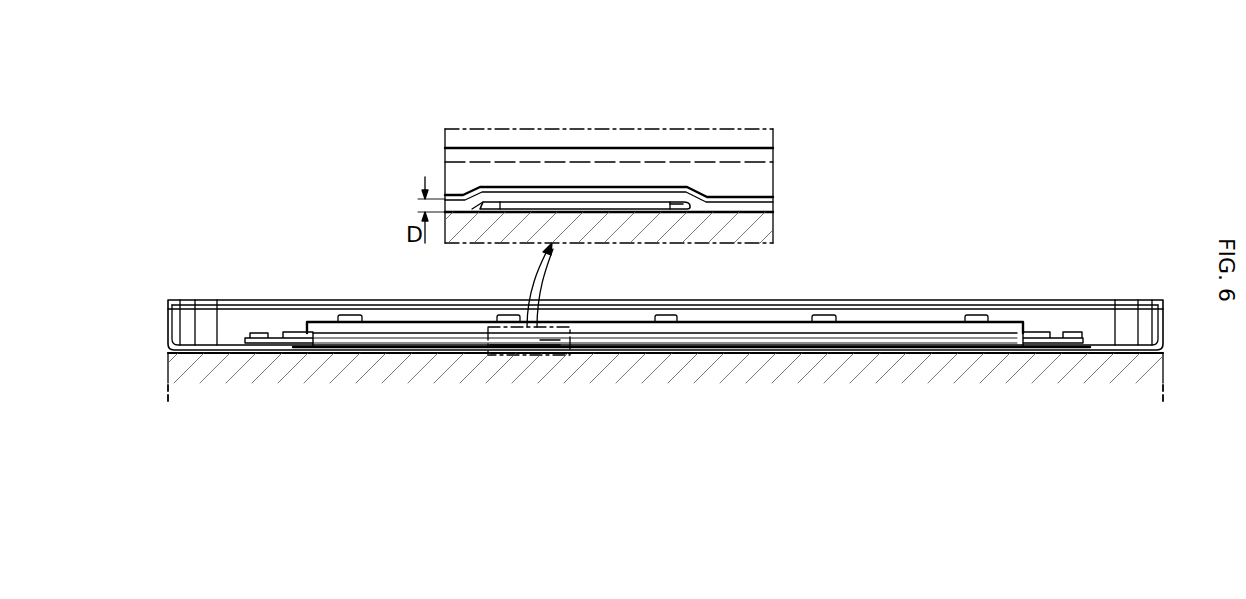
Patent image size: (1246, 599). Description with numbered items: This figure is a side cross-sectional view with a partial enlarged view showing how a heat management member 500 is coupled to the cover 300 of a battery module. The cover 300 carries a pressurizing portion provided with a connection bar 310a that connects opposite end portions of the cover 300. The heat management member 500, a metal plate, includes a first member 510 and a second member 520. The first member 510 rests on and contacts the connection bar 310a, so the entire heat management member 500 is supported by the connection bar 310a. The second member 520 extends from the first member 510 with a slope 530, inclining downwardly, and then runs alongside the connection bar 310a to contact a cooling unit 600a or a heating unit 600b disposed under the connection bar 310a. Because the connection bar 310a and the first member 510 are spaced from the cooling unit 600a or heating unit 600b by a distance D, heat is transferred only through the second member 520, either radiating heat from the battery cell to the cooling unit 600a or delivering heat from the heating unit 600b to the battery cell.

The cover 300 is at (993, 281).
The heat management member 500 is at (293, 325).
The first member 510 is at (552, 332).
The second member 520 is at (475, 354).
The slope 530 is at (502, 354).
The connection bar 310a is at (528, 354).
The cooling unit 600a is at (665, 324).
The heating unit 600b is at (1052, 365).